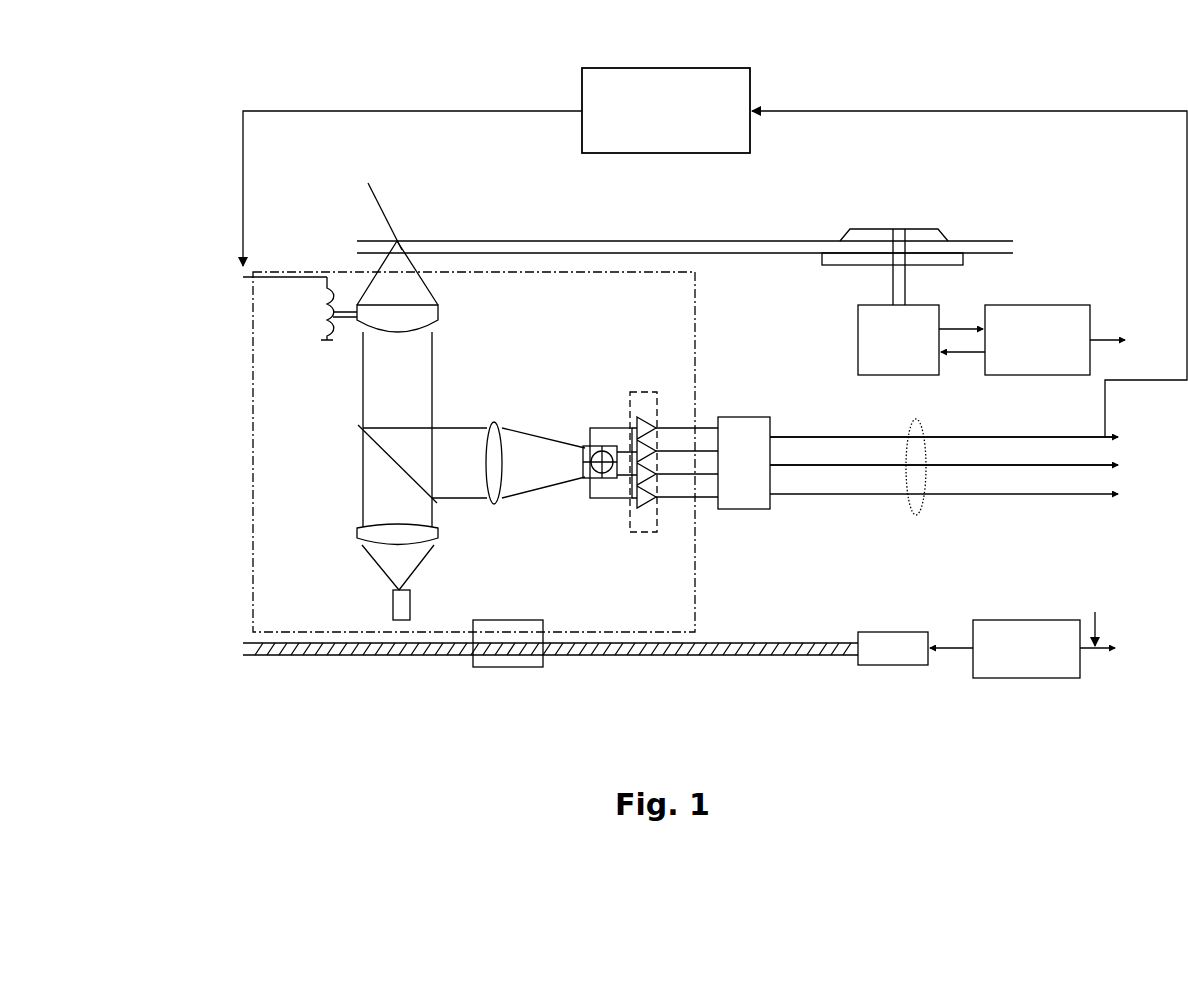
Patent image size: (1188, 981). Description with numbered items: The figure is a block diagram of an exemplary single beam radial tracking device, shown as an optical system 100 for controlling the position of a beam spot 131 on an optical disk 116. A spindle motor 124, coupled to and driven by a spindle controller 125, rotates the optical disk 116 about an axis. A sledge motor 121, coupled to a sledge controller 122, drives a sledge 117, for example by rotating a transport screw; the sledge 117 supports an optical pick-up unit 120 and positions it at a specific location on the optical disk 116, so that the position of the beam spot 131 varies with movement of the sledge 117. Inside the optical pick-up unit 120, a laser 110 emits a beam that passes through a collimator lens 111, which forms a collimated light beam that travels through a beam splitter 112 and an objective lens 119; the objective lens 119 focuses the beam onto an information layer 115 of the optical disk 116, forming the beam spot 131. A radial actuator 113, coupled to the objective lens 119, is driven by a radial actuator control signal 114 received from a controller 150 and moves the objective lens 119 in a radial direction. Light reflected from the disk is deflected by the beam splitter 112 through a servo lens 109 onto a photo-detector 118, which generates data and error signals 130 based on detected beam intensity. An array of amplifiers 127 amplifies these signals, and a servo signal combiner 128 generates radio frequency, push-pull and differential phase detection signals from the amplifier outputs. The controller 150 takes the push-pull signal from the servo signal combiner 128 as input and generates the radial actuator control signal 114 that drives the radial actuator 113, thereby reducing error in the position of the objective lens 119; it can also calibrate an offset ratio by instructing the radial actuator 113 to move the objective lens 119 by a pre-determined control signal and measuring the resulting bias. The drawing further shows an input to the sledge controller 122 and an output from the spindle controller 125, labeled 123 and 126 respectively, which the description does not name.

The optical system 100 is at (150, 324).
The servo lens 109 is at (492, 457).
The laser 110 is at (398, 603).
The collimator lens 111 is at (413, 532).
The beam splitter 112 is at (398, 465).
The radial actuator 113 is at (326, 305).
The radial actuator control signal 114 is at (390, 194).
The information layer 115 is at (451, 239).
The optical disk 116 is at (617, 239).
The sledge 117 is at (655, 650).
The photo-detector 118 is at (607, 479).
The objective lens 119 is at (430, 318).
The optical pick-up unit 120 is at (680, 575).
The sledge motor 121 is at (888, 632).
The sledge controller 122 is at (1005, 620).
The sledge controller input 123 is at (1097, 619).
The spindle motor 124 is at (905, 363).
The spindle controller 125 is at (1031, 363).
The spindle controller output 126 is at (1116, 327).
The array of amplifiers 127 is at (638, 394).
The servo signal combiner 128 is at (752, 506).
The data and error signals 130 is at (925, 510).
The beam spot 131 is at (376, 205).
The controller 150 is at (723, 68).